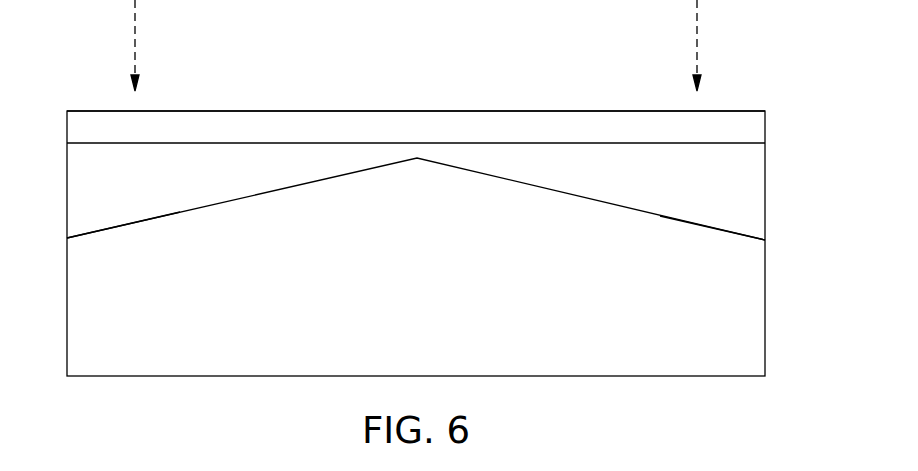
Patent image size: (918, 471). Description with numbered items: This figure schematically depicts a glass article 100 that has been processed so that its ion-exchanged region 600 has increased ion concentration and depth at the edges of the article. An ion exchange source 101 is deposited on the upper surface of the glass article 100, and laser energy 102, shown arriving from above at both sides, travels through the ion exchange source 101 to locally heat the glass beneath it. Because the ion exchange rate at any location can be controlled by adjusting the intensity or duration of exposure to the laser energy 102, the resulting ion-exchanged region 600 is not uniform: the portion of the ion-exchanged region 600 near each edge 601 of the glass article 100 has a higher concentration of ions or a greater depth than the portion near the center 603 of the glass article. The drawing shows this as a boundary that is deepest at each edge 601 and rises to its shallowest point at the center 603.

The glass article 100 is at (780, 111).
The ion exchange source 101 is at (748, 114).
The laser energy 102 is at (137, 24).
The ion-exchanged region 600 is at (608, 155).
The edge 601 is at (89, 240).
The center 603 is at (417, 160).